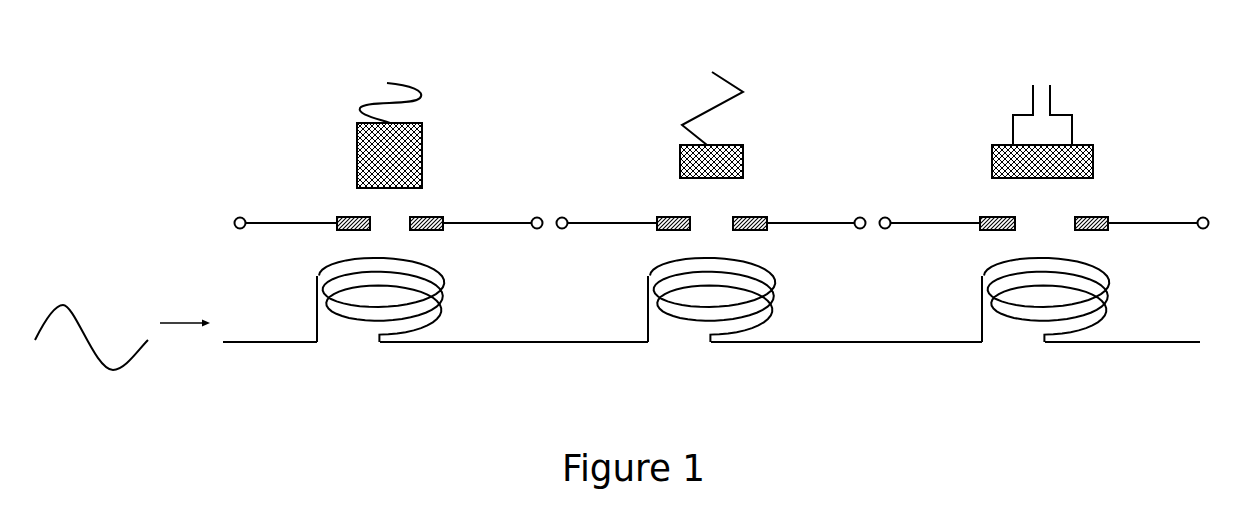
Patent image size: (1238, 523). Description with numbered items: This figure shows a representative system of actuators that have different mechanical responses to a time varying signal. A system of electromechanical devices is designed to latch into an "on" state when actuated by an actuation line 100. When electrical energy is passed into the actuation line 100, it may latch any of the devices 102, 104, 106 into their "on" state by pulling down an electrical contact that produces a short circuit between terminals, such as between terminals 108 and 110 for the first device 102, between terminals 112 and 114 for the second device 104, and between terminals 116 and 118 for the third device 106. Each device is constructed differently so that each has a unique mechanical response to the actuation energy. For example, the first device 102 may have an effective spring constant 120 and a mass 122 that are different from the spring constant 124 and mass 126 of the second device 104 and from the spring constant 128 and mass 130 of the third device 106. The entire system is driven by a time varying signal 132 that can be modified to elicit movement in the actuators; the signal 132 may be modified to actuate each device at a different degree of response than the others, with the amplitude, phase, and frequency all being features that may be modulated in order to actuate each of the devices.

The actuation line 100 is at (262, 343).
The device 102 is at (367, 361).
The device 104 is at (713, 361).
The device 106 is at (1045, 361).
The terminal 108 is at (335, 215).
The terminal 110 is at (450, 212).
The terminal 112 is at (650, 210).
The terminal 114 is at (763, 212).
The terminal 116 is at (985, 212).
The terminal 118 is at (1103, 212).
The spring constant 120 is at (372, 95).
The mass 122 is at (423, 132).
The spring constant 124 is at (712, 95).
The mass 126 is at (735, 142).
The spring constant 128 is at (1015, 105).
The mass 130 is at (1088, 145).
The time varying signal 132 is at (102, 362).